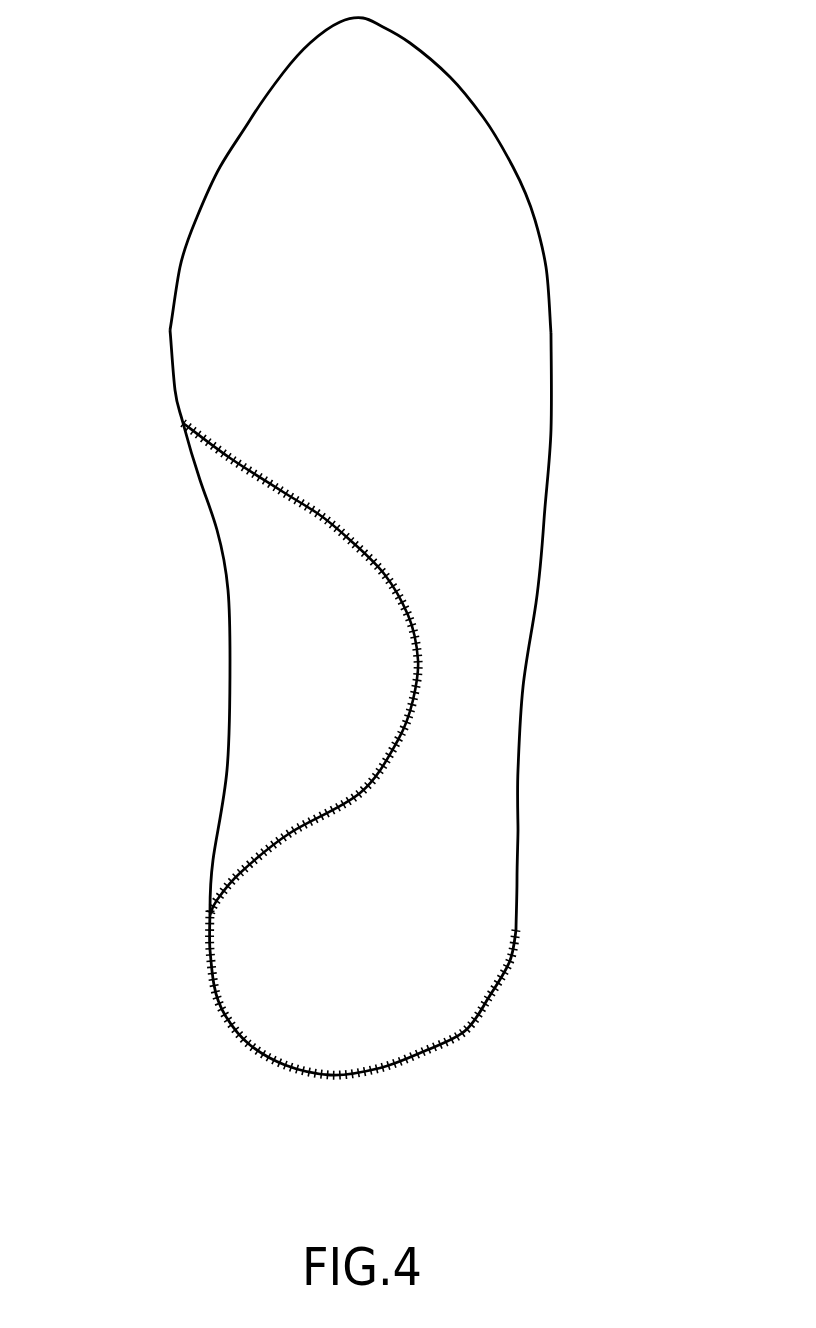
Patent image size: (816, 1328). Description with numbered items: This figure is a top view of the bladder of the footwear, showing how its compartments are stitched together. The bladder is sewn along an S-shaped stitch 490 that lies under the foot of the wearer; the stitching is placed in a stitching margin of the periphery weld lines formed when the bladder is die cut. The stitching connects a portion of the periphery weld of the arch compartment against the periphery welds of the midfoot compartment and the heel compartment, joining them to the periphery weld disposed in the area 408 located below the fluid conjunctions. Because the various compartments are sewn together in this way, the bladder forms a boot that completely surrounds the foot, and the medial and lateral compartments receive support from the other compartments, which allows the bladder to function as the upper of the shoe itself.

The S-shaped stitch 490 is at (320, 513).
The area below the fluid conjunctions 408 is at (194, 1022).